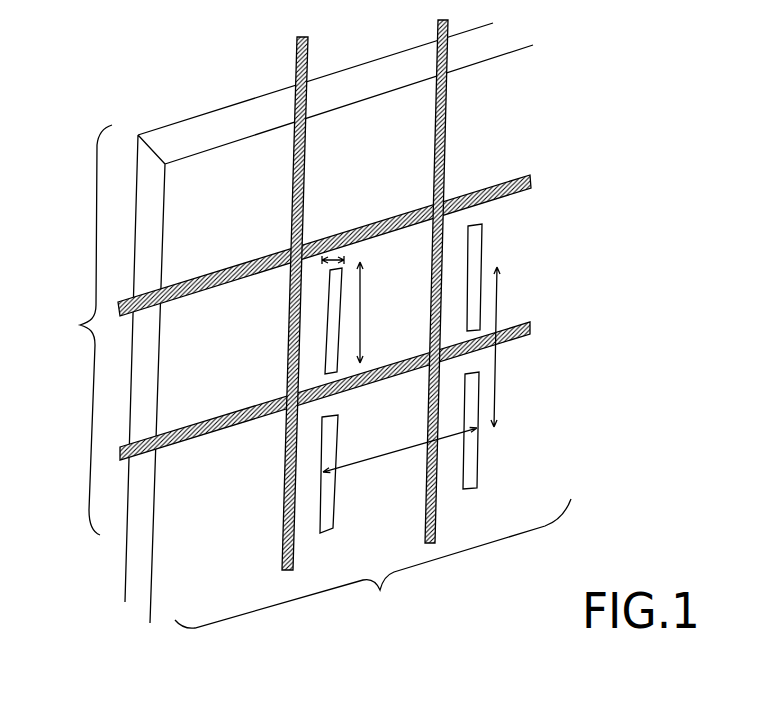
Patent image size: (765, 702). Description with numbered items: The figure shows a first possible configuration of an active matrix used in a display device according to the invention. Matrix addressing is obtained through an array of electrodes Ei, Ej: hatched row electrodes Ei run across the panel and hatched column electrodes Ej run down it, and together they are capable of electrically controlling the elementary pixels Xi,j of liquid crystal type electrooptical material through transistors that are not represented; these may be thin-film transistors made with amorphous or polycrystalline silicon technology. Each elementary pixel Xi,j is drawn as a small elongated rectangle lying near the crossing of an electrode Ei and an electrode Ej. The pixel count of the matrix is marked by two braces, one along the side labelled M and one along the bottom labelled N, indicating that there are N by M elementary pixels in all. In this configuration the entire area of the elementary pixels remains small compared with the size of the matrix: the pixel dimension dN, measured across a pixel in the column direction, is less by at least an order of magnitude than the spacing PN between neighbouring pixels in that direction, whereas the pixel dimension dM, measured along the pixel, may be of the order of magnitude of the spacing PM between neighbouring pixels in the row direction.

The electrode Ei is at (517, 192).
The electrode Ej is at (295, 60).
The elementary pixel Xi,j is at (445, 187).
The number of pixel rows M is at (81, 330).
The number of pixel columns N is at (373, 563).
The pixel dimension dN is at (346, 255).
The pixel dimension dM is at (362, 308).
The pixel spacing PM is at (498, 360).
The pixel spacing PN is at (388, 452).